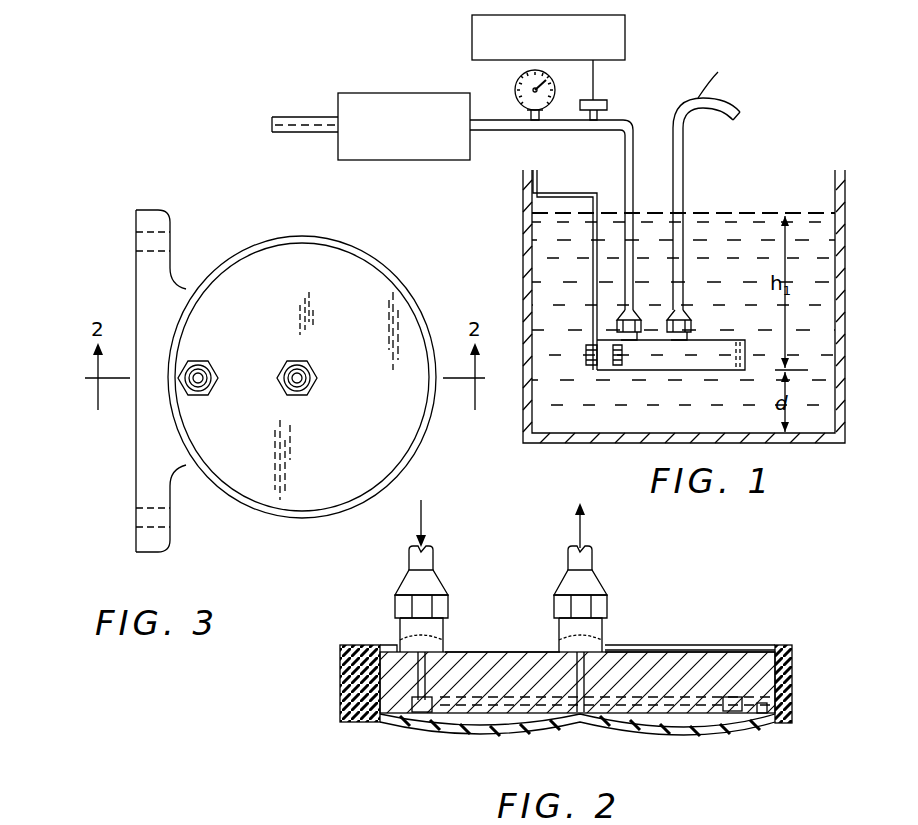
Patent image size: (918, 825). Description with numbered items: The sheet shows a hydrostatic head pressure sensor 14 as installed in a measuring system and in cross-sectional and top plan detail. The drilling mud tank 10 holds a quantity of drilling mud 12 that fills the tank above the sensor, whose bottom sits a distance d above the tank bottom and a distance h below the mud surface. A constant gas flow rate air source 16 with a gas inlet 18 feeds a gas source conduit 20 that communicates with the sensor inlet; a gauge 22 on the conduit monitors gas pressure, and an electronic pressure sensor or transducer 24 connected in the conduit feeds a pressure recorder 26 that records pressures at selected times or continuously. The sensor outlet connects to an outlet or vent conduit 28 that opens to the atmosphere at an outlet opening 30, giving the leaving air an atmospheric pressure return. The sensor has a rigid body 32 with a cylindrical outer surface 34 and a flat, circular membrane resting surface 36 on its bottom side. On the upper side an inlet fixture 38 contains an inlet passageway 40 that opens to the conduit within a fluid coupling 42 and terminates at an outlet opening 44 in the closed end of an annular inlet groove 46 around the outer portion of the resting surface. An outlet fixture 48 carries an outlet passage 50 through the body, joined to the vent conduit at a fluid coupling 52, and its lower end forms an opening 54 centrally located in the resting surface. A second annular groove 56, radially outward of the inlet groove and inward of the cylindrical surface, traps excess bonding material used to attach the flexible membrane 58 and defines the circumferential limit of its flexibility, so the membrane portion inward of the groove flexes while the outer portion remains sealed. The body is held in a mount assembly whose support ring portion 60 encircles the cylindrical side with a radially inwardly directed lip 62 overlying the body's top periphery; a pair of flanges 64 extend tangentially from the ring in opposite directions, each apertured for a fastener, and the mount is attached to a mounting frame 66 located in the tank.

In FIG. 1, the drilling mud tank 10 is at (523, 201).
In FIG. 1, the drilling mud 12 is at (545, 233).
In FIG. 1, the hydrostatic head pressure sensor 14 is at (675, 378).
In FIG. 3, the hydrostatic head pressure sensor 14 is at (400, 265).
In FIG. 2, the hydrostatic head pressure sensor 14 is at (700, 612).
In FIG. 1, the constant gas flow rate air source 16 is at (384, 93).
In FIG. 1, the gas inlet 18 is at (290, 120).
In FIG. 1, the gas source conduit 20 is at (535, 132).
In FIG. 3, the gas source conduit 20 is at (203, 395).
In FIG. 2, the gas source conduit 20 is at (410, 558).
In FIG. 1, the gauge 22 is at (520, 100).
In FIG. 1, the electronic pressure sensor or transducer 24 is at (606, 102).
In FIG. 1, the pressure recorder 26 is at (472, 42).
In FIG. 1, the outlet or vent conduit 28 is at (683, 152).
In FIG. 3, the outlet or vent conduit 28 is at (318, 398).
In FIG. 2, the outlet or vent conduit 28 is at (569, 558).
In FIG. 1, the outlet opening 30 is at (738, 117).
In FIG. 3, the body 32 is at (272, 258).
In FIG. 2, the body 32 is at (508, 668).
In FIG. 2, the cylindrical outer surface 34 is at (782, 665).
In FIG. 2, the membrane resting surface 36 is at (500, 730).
In FIG. 1, the inlet fixture 38 is at (640, 325).
In FIG. 2, the inlet fixture 38 is at (400, 628).
In FIG. 2, the inlet passageway 40 is at (428, 650).
In FIG. 3, the fluid coupling 42 is at (212, 365).
In FIG. 2, the fluid coupling 42 is at (430, 590).
In FIG. 2, the outlet opening 44 is at (418, 715).
In FIG. 2, the annular inlet groove 46 is at (420, 712).
In FIG. 1, the outlet fixture 48 is at (692, 326).
In FIG. 2, the outlet fixture 48 is at (605, 628).
In FIG. 2, the outlet passage 50 is at (592, 665).
In FIG. 3, the fluid coupling 52 is at (315, 368).
In FIG. 2, the fluid coupling 52 is at (592, 585).
In FIG. 2, the opening 54 is at (580, 714).
In FIG. 2, the second annular groove 56 is at (762, 714).
In FIG. 2, the flexible membrane 58 is at (682, 732).
In FIG. 3, the support ring portion 60 is at (310, 518).
In FIG. 2, the support ring portion 60 is at (790, 690).
In FIG. 3, the radially inwardly directed lip 62 is at (352, 268).
In FIG. 2, the radially inwardly directed lip 62 is at (762, 648).
In FIG. 1, the flanges 64 is at (592, 372).
In FIG. 3, the flanges 64 is at (165, 212).
In FIG. 2, the flanges 64 is at (340, 660).
In FIG. 1, the mounting frame 66 is at (593, 270).